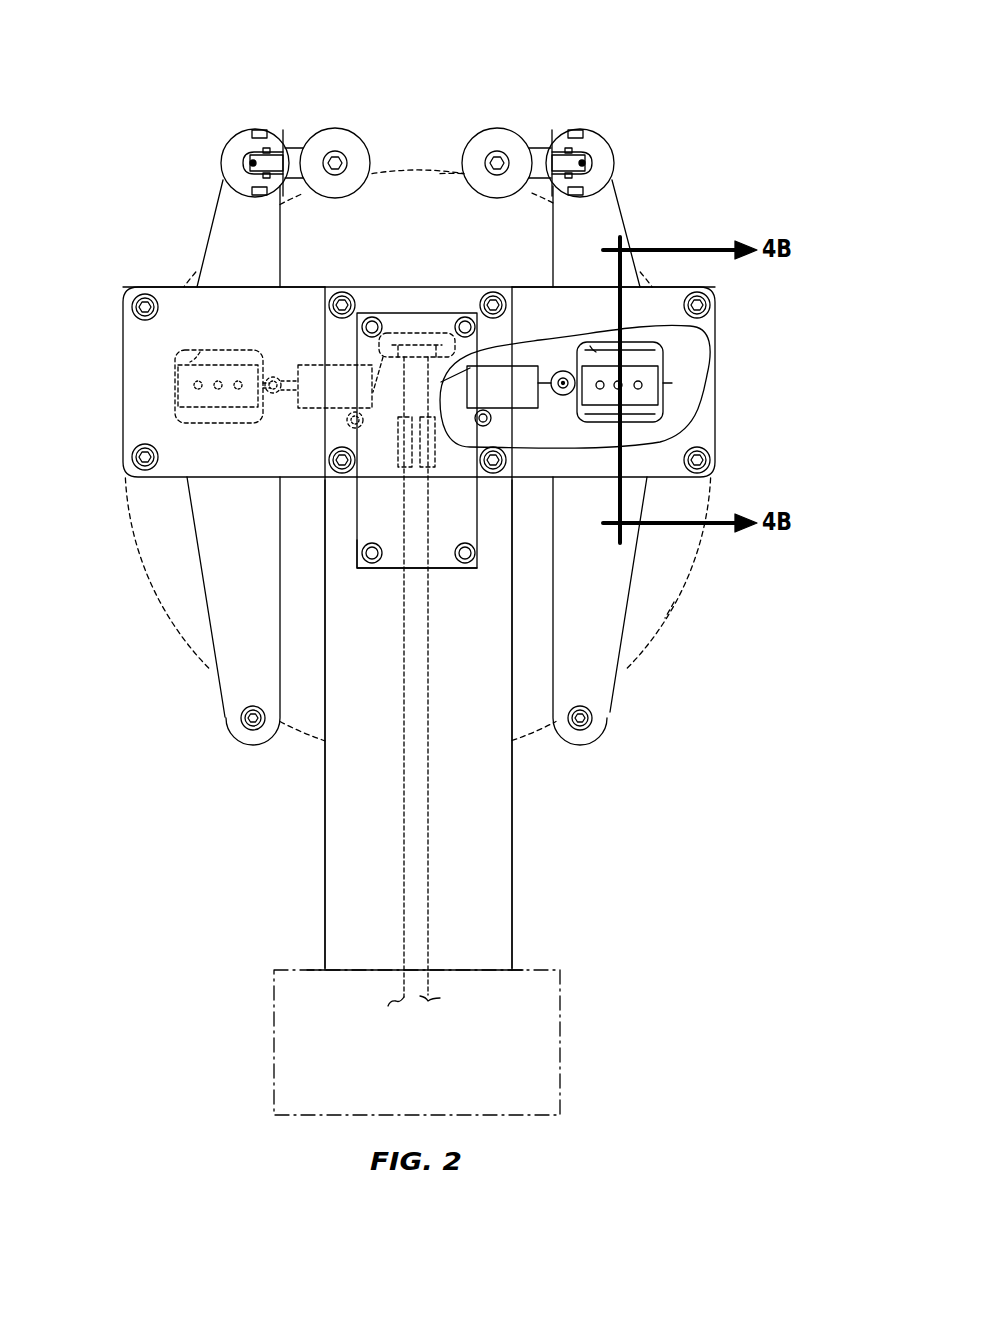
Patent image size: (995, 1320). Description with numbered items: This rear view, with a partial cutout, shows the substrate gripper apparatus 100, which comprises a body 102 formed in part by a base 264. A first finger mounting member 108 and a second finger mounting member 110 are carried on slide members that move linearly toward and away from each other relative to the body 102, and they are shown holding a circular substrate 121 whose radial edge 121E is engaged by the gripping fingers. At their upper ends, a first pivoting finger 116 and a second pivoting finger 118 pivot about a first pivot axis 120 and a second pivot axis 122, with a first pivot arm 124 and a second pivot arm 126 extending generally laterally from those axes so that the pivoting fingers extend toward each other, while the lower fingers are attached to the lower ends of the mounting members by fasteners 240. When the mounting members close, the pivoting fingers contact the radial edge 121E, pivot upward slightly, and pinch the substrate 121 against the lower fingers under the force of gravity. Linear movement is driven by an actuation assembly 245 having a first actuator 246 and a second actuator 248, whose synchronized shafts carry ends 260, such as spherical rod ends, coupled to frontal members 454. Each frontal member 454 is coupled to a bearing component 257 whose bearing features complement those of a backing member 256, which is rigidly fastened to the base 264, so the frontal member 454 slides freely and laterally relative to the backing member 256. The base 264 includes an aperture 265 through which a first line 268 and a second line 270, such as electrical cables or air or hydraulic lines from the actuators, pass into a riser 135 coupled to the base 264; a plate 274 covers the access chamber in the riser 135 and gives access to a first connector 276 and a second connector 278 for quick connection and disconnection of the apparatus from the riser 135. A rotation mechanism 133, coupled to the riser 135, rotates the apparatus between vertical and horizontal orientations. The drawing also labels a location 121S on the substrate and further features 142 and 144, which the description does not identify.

The substrate gripper apparatus 100 is at (598, 62).
The body 102 is at (720, 291).
The first finger mounting member 108 is at (623, 212).
The second finger mounting member 110 is at (207, 237).
The first pivoting finger 116 is at (486, 124).
The second pivoting finger 118 is at (360, 124).
The first pivot axis 120 is at (584, 150).
The substrate 121 is at (668, 641).
The radial edge 121E is at (677, 607).
The path start 121S is at (500, 255).
The second pivot axis 122 is at (252, 158).
The first pivot arm 124 is at (533, 160).
The second pivot arm 126 is at (297, 157).
The rotation mechanism 133 is at (560, 1030).
The riser 135 is at (513, 830).
The clamp 142 is at (614, 160).
The clamp 144 is at (222, 165).
The fasteners 240 is at (338, 176).
The actuation assembly 245 is at (583, 460).
The first actuator 246 is at (513, 410).
The second actuator 248 is at (313, 410).
The backing member 256 is at (178, 385).
The bearing component 257 is at (185, 345).
The ends 260 is at (557, 373).
The base 264 is at (132, 282).
The aperture 265 is at (420, 333).
The first line 268 is at (428, 680).
The second line 270 is at (405, 676).
The plate 274 is at (393, 568).
The first connector 276 is at (400, 467).
The second connector 278 is at (432, 467).
The frontal member 454 is at (258, 328).